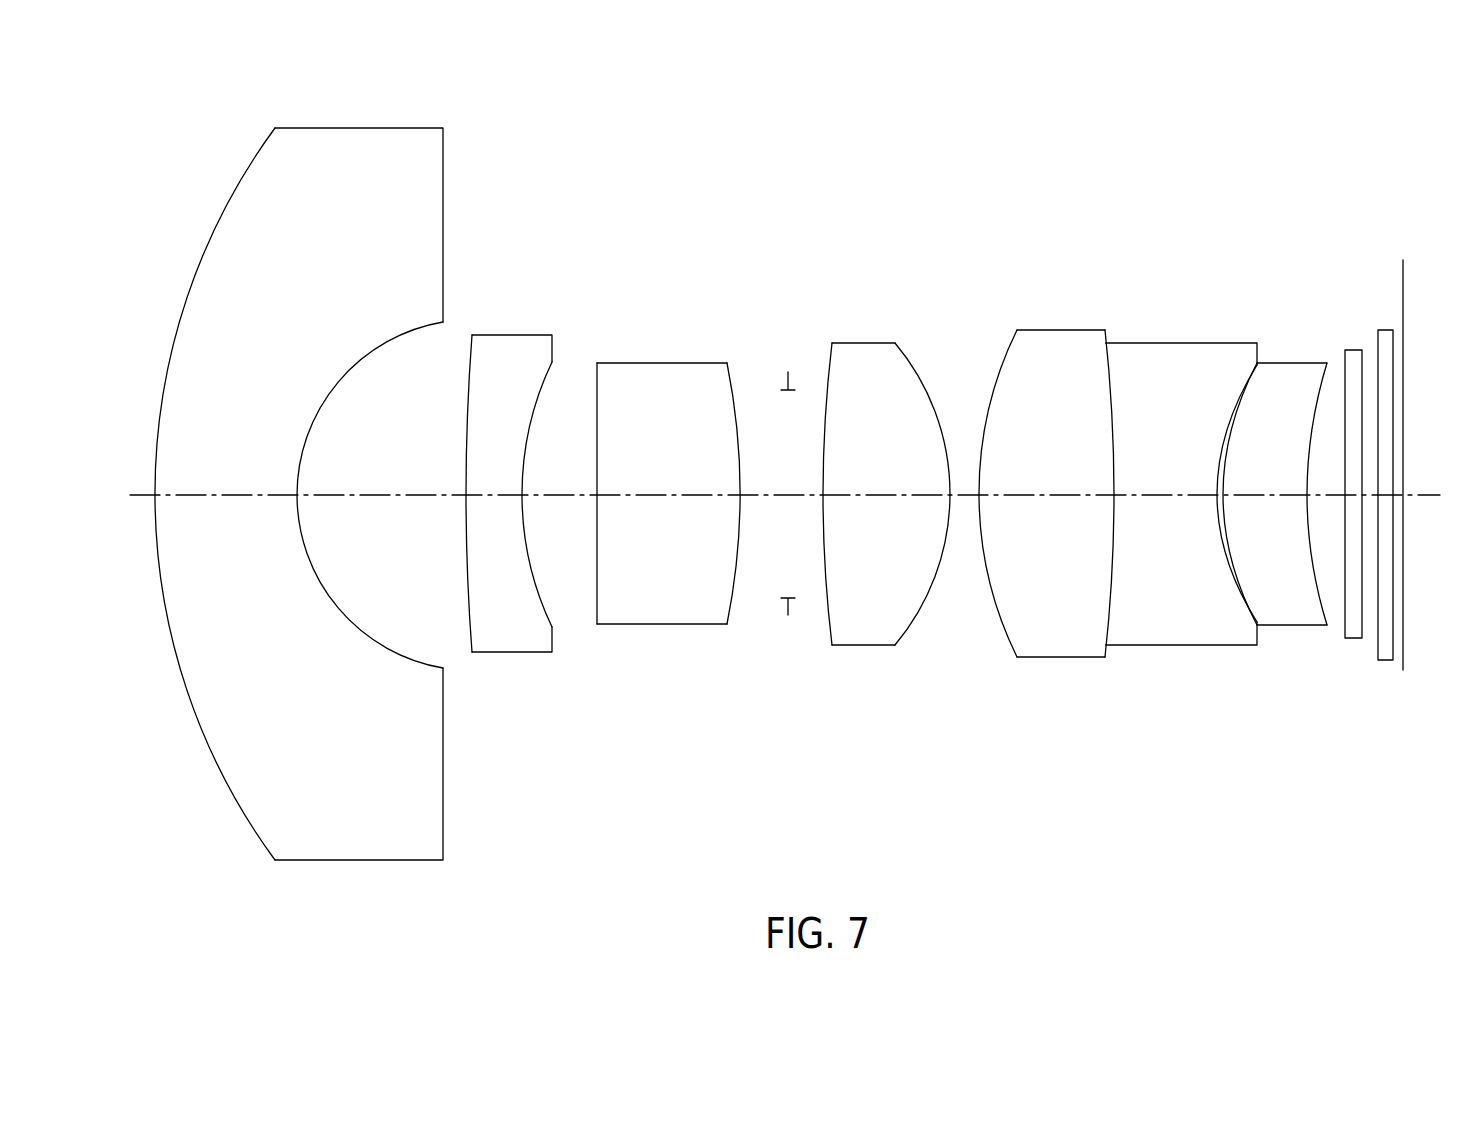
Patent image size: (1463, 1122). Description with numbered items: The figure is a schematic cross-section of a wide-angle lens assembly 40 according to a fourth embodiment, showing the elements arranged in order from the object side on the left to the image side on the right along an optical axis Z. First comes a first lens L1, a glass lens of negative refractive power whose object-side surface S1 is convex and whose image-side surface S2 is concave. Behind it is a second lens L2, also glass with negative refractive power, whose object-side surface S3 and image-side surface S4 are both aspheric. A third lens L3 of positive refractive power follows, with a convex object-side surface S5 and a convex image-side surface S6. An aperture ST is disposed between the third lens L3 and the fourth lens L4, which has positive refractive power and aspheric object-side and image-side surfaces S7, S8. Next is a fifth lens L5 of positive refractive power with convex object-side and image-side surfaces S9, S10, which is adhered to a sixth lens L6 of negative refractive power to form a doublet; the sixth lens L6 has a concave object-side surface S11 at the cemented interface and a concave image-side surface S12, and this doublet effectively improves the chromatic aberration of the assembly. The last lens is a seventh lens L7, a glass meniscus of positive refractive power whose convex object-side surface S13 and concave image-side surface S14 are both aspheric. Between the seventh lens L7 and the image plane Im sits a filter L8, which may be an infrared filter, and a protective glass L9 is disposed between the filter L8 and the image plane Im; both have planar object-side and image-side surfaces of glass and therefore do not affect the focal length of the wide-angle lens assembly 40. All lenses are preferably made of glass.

The wide-angle lens assembly 40 is at (188, 197).
The first lens L1 is at (310, 476).
The second lens L2 is at (567, 499).
The third lens L3 is at (707, 498).
The aperture ST is at (787, 370).
The fourth lens L4 is at (878, 497).
The fifth lens L5 is at (1086, 504).
The sixth lens L6 is at (1186, 504).
The seventh lens L7 is at (1319, 492).
The filter L8 is at (1352, 353).
The protective glass L9 is at (1390, 337).
The image plane Im is at (1403, 260).
The optical axis Z is at (766, 494).
The object-side surface of first lens S1 is at (200, 728).
The image-side surface of first lens S2 is at (412, 660).
The object-side surface of second lens S3 is at (468, 600).
The image-side surface of second lens S4 is at (537, 590).
The object-side surface of third lens S5 is at (597, 538).
The image-side surface of third lens S6 is at (738, 550).
The object-side surface of fourth lens S7 is at (828, 597).
The image-side surface of fourth lens S8 is at (920, 615).
The object-side surface of fifth lens S9 is at (993, 598).
The image-side surface of fifth lens S10 is at (1110, 597).
The object-side surface of sixth lens S11 is at (1132, 612).
The image-side surface of sixth lens S12 is at (1228, 568).
The object-side surface of seventh lens S13 is at (1238, 600).
The image-side surface of seventh lens S14 is at (1308, 568).